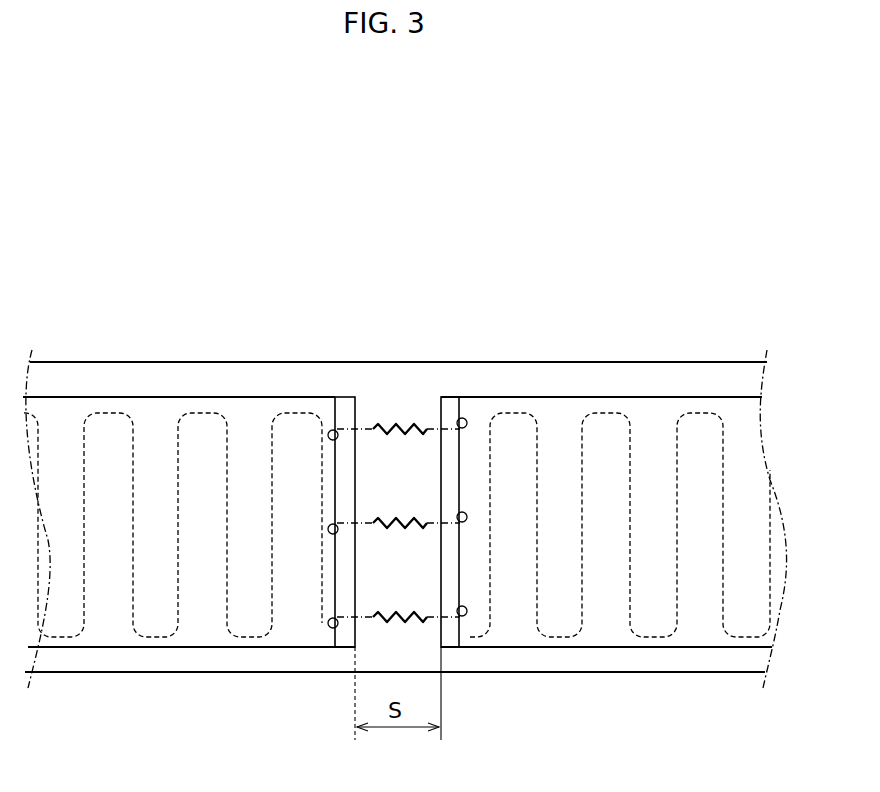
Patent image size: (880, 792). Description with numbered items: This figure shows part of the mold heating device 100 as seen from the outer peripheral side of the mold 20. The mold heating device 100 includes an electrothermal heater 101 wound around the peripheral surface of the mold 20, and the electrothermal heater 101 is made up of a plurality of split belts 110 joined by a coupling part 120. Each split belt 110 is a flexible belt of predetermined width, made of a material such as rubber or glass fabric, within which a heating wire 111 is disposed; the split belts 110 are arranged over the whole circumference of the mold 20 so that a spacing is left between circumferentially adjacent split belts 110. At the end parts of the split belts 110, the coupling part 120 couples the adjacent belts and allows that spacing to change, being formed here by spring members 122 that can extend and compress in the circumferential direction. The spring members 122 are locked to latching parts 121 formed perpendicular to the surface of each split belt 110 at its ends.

The mold 20 is at (530, 362).
The mold heating device 100 is at (125, 678).
The electrothermal heater 101 is at (203, 673).
The split belt 110 is at (127, 397).
The heating wire 111 is at (100, 412).
The coupling part 120 is at (411, 529).
The latching part 121 is at (334, 632).
The spring member 122 is at (410, 520).